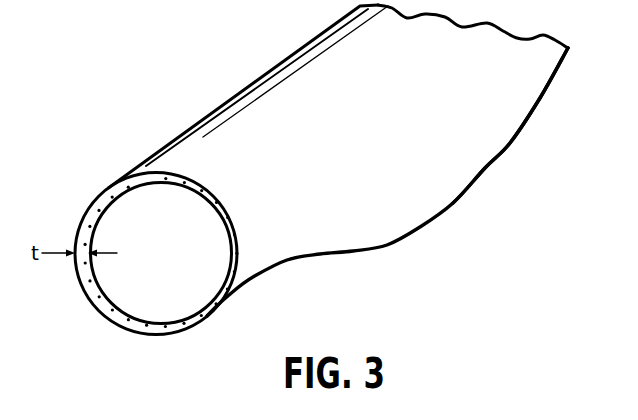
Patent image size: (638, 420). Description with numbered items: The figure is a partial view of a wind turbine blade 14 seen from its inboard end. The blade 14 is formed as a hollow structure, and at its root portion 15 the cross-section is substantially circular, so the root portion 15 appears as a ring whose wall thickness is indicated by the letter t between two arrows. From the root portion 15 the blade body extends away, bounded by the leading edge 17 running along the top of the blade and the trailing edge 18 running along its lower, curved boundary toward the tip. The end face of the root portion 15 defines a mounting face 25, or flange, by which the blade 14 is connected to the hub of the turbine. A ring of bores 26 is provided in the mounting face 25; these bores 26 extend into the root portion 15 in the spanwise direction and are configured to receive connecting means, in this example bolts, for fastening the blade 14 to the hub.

The blade 14 is at (492, 216).
The root portion 15 is at (147, 165).
The leading edge 17 is at (291, 57).
The trailing edge 18 is at (512, 143).
The mounting face 25 is at (112, 316).
The bores 26 is at (90, 297).